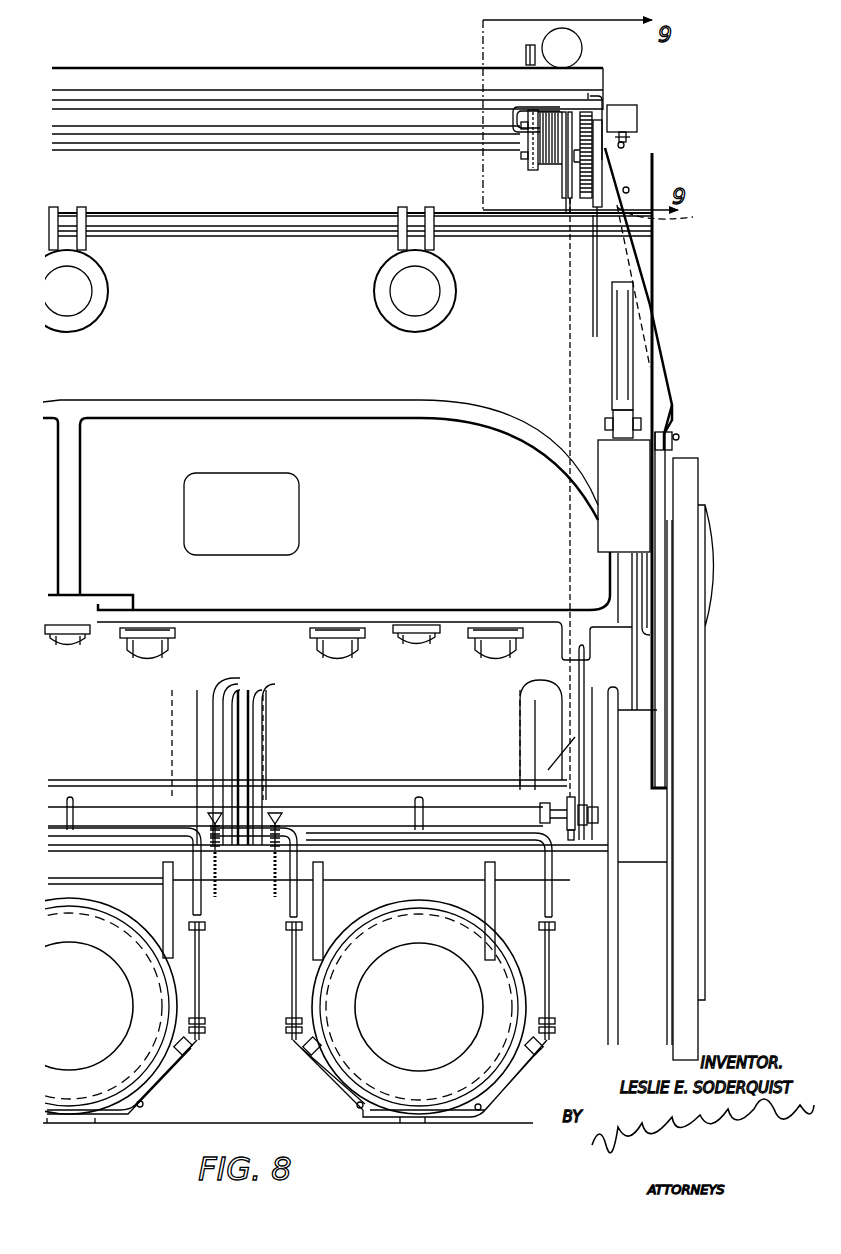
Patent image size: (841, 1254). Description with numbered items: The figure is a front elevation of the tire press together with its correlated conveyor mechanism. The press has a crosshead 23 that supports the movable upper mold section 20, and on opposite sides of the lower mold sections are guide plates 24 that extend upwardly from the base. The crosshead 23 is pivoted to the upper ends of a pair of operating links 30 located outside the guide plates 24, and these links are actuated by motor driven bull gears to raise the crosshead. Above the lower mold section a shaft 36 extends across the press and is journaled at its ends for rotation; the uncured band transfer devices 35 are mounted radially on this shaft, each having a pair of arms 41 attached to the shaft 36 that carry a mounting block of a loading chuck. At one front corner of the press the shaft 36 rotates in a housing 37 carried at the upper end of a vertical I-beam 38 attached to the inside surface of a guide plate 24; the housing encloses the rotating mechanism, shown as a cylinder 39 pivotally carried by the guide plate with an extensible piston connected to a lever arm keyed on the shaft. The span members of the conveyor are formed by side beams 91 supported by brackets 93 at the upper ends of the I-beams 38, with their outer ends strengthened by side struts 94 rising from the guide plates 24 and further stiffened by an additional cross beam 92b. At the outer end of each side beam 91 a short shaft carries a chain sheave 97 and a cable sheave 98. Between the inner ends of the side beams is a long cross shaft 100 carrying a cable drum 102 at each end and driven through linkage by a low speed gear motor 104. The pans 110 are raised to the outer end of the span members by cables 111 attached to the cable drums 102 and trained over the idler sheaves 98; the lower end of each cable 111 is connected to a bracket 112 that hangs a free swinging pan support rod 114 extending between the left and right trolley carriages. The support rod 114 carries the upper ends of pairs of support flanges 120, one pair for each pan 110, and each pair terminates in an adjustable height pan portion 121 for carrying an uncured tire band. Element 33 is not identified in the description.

The additional cross beam 92b is at (235, 76).
The cross shaft 100 is at (257, 148).
The gear motor 104 is at (582, 50).
The side beam 91 is at (607, 102).
The bracket 93 is at (600, 148).
The chain sheave 97 is at (592, 186).
The cable drum 102 is at (537, 168).
The cable sheave 98 is at (566, 186).
The housing 37 is at (667, 216).
The vertical I-beam 38 is at (653, 258).
The arm 41 is at (82, 209).
The uncured band transfer device 35 is at (110, 279).
The shaft 36 is at (272, 240).
The cable 111 is at (565, 338).
The cylinder 39 is at (620, 383).
The side strut 94 is at (658, 378).
The crosshead 23 is at (390, 410).
The housing box 33 is at (603, 523).
The guide plate 24 is at (660, 488).
The operating link 30 is at (692, 756).
The upper mold section 20 is at (262, 690).
The pan support rod 114 is at (440, 805).
The bracket 112 is at (590, 810).
The support flange 120 is at (200, 903).
The pan 110 is at (205, 990).
The pan portion 121 is at (160, 1085).